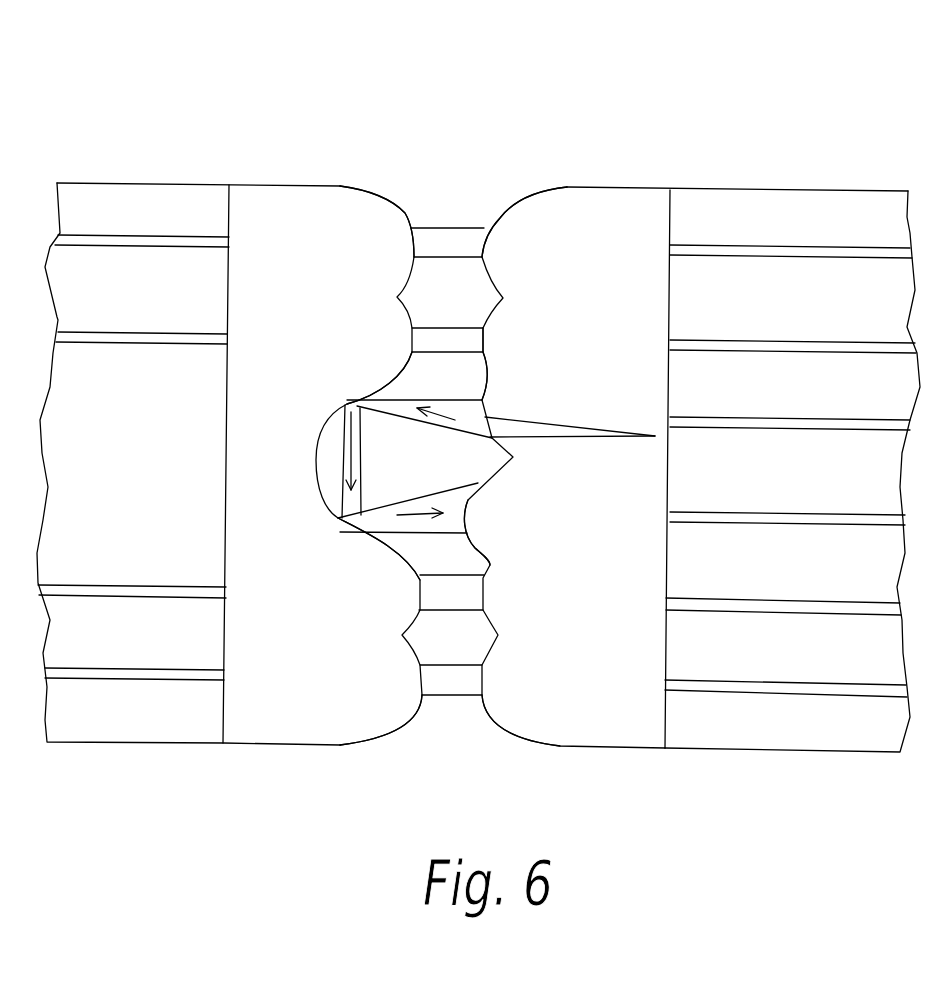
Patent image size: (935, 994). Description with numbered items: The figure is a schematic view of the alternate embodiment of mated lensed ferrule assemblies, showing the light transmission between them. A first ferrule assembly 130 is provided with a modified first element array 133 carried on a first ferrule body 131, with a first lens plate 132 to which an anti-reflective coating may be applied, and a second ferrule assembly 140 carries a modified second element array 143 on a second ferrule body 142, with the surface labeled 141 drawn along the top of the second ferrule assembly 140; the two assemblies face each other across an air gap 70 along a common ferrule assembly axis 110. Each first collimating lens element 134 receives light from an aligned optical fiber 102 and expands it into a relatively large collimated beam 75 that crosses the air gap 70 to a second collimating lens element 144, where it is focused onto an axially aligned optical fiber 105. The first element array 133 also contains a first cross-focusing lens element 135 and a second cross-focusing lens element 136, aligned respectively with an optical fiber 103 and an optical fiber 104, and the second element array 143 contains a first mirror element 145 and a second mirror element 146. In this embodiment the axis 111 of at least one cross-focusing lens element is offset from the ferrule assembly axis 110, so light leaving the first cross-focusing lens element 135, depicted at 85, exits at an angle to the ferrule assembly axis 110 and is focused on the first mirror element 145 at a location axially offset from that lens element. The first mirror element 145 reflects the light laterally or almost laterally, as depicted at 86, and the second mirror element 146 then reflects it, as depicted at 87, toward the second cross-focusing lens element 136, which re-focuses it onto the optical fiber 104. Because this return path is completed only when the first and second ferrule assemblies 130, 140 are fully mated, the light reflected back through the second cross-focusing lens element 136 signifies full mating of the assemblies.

The air gap 70 is at (447, 413).
The collimated beam 75 is at (466, 250).
The light exiting first cross-focusing lens element 85 is at (415, 466).
The laterally reflected light 86 is at (362, 455).
The light reflected toward second cross-focusing lens element 87 is at (403, 497).
The optical fiber 102 is at (855, 247).
The optical fiber 103 is at (893, 418).
The optical fiber 104 is at (880, 513).
The optical fiber 105 is at (201, 241).
The ferrule assembly axis 110 is at (570, 436).
The axis of cross-focusing lens element 111 is at (563, 420).
The first ferrule assembly 130 is at (743, 385).
The first ferrule body 131 is at (784, 188).
The first lens plate 132 is at (564, 401).
The first element array 133 is at (528, 160).
The first collimating lens element 134 is at (505, 325).
The first cross-focusing lens element 135 is at (508, 390).
The second cross-focusing lens element 136 is at (495, 513).
The second ferrule assembly 140 is at (188, 401).
The first block top surface 141 is at (113, 186).
The second ferrule body 142 is at (344, 397).
The second element array 143 is at (385, 160).
The second collimating lens element 144 is at (378, 327).
The first mirror element 145 is at (332, 408).
The second mirror element 146 is at (335, 533).